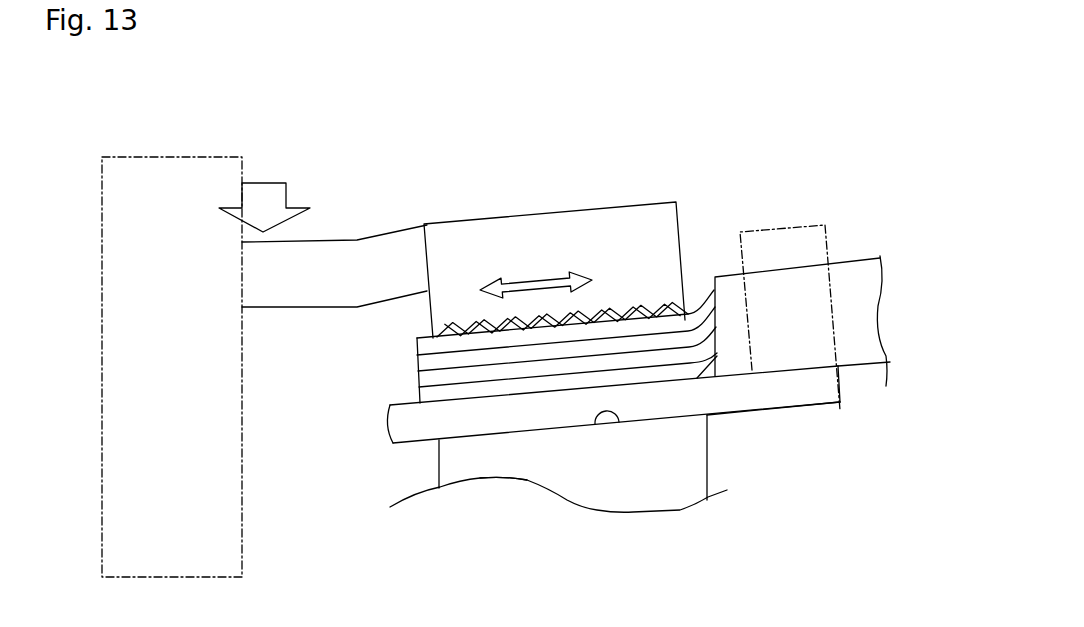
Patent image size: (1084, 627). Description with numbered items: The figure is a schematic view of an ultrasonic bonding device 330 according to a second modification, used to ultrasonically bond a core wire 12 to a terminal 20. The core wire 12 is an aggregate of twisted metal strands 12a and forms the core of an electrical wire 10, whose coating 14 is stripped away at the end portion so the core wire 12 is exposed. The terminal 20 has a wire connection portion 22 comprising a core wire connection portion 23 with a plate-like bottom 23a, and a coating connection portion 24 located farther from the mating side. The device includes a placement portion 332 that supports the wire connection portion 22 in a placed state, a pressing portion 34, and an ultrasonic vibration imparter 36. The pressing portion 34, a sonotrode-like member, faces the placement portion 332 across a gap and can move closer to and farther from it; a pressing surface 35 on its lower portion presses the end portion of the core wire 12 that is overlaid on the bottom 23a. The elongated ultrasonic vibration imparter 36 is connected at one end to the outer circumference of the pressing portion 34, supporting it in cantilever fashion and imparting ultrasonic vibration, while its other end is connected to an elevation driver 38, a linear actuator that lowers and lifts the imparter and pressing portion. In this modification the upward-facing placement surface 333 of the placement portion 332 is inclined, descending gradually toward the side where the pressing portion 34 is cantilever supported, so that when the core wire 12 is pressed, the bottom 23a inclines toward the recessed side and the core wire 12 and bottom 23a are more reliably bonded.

The electrical wire 10 is at (860, 253).
The core wire 12 is at (417, 345).
The strand 12a is at (418, 371).
The coating 14 is at (873, 333).
The terminal 20 is at (840, 405).
The wire connection portion 22 is at (797, 410).
The core wire connection portion 23 is at (467, 440).
The bottom 23a is at (532, 420).
The coating connection portion 24 is at (843, 380).
The pressing portion 34 is at (677, 204).
The pressing surface 35 is at (658, 320).
The ultrasonic vibration imparter 36 is at (360, 235).
The elevation driver 38 is at (218, 152).
The ultrasonic bonding device 330 is at (428, 152).
The placement portion 332 is at (707, 460).
The placement surface 333 is at (618, 423).